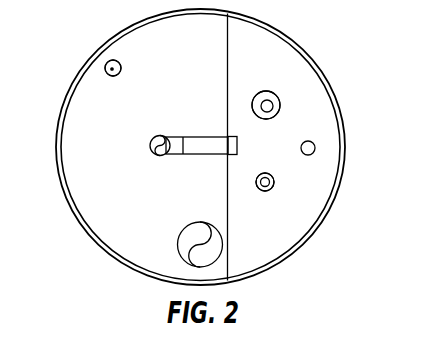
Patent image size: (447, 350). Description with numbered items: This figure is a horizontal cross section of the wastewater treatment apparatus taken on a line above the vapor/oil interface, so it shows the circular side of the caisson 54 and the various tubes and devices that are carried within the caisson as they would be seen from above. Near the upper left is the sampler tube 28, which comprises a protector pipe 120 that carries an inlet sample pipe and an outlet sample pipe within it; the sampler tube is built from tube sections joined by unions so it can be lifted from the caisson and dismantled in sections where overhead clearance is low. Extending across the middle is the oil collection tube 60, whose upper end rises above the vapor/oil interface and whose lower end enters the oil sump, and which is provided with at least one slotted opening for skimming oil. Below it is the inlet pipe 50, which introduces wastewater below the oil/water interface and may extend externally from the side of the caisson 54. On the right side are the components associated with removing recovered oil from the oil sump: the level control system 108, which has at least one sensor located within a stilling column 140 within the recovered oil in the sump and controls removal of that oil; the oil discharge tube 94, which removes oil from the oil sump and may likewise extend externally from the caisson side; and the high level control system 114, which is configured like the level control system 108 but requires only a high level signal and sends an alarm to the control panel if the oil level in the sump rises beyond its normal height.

The side of the caisson 54 is at (176, 147).
The sampler tube 28 is at (88, 41).
The protector pipe 120 is at (155, 58).
The oil collection tube 60 is at (163, 125).
The inlet pipe 50 is at (177, 222).
The level control system 108 is at (321, 84).
The stilling column 140 is at (309, 144).
The oil discharge tube 94 is at (344, 127).
The high level control system 114 is at (327, 164).